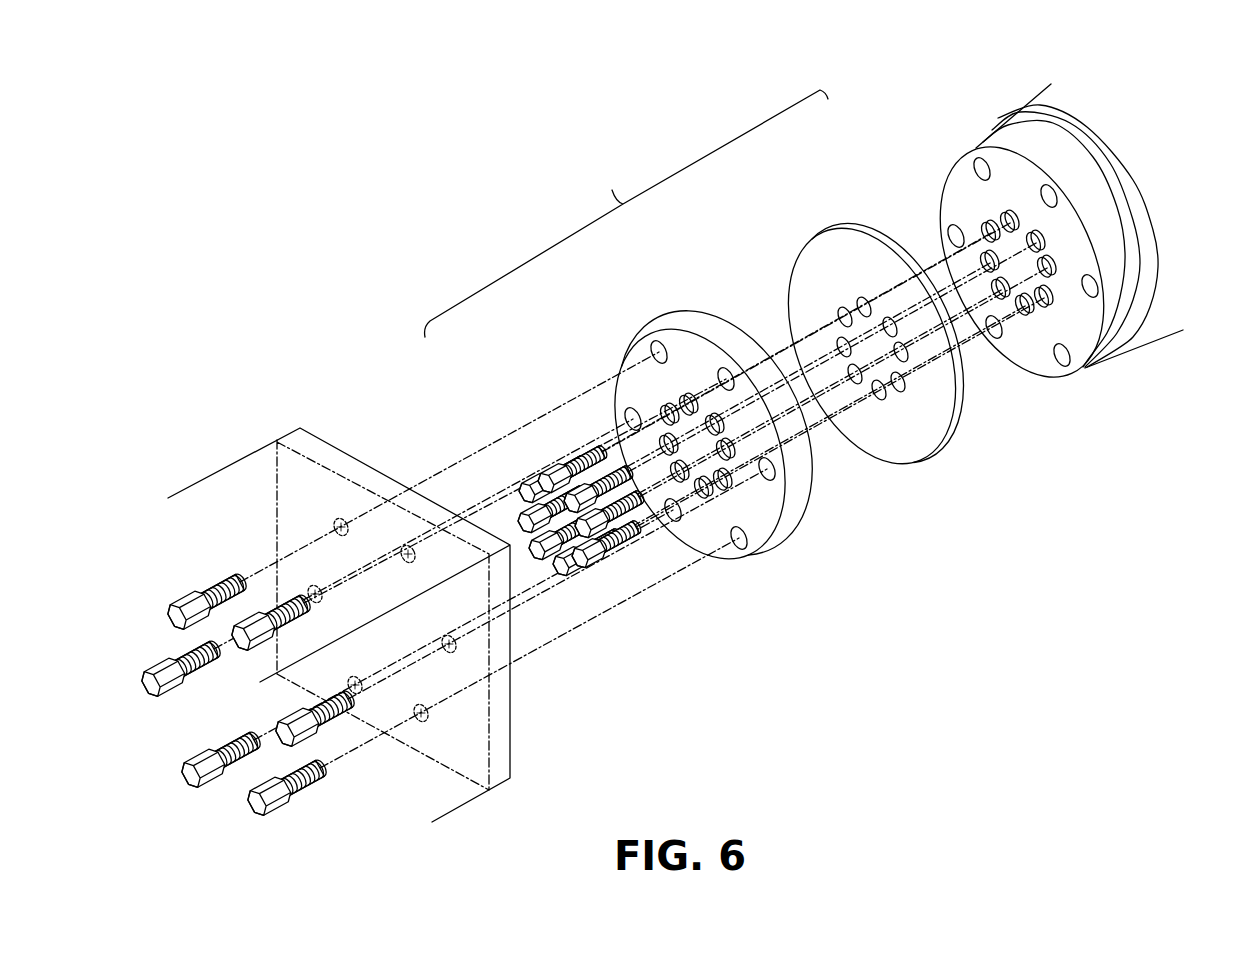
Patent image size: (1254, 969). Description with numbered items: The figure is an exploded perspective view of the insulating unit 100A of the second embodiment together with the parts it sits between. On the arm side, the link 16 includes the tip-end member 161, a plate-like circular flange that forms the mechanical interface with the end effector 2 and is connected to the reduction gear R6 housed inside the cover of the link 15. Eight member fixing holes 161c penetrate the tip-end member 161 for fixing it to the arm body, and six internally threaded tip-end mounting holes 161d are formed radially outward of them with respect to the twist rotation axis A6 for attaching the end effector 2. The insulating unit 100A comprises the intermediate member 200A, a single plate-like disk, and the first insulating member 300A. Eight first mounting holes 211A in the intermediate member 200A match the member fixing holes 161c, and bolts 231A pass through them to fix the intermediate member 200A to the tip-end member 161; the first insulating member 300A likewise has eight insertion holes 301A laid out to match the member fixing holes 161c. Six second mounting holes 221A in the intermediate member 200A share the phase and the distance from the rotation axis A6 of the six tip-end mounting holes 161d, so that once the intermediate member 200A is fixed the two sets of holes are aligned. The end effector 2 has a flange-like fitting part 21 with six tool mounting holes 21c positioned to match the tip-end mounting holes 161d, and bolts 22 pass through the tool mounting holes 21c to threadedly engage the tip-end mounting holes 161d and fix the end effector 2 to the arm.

The end effector 2 is at (262, 448).
The fitting part 21 is at (310, 446).
The tool mounting holes 21c is at (341, 520).
The bolt 22 is at (215, 580).
The insulating unit 100A is at (739, 396).
The intermediate member 200A is at (725, 452).
The first mounting holes 211A is at (706, 498).
The second mounting holes 221A is at (776, 482).
The bolts 231A is at (607, 556).
The first insulating member 300A is at (873, 359).
The insertion holes 301A is at (903, 402).
The link 15 is at (1050, 264).
The link 16 is at (962, 148).
The reduction gear R6 is at (1003, 113).
The tip-end member 161 is at (1125, 340).
The member fixing holes 161c is at (1098, 374).
The tip-end mounting holes 161d is at (1078, 373).
The twist rotation axis A6 is at (967, 333).